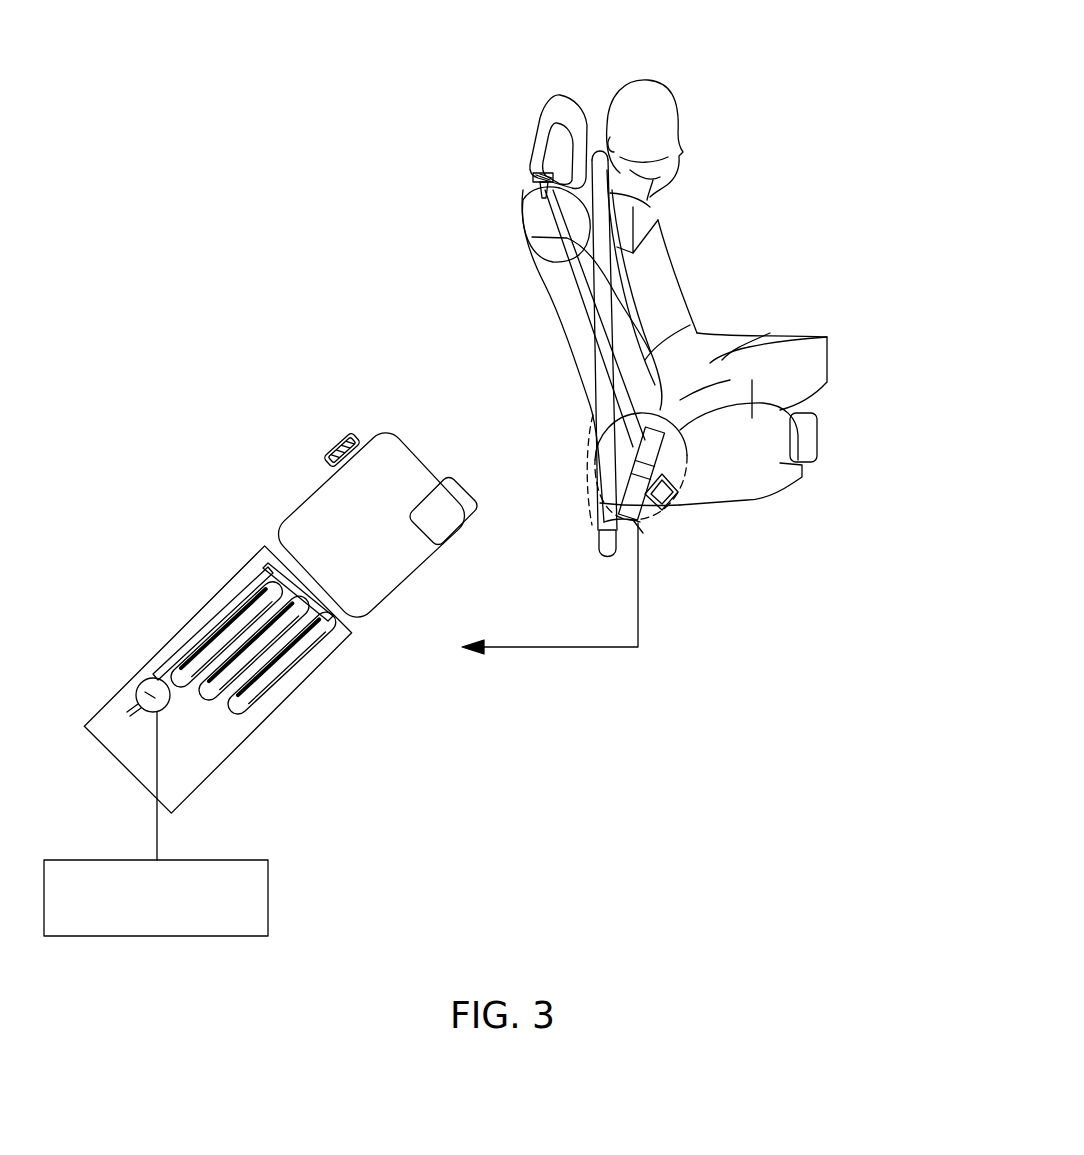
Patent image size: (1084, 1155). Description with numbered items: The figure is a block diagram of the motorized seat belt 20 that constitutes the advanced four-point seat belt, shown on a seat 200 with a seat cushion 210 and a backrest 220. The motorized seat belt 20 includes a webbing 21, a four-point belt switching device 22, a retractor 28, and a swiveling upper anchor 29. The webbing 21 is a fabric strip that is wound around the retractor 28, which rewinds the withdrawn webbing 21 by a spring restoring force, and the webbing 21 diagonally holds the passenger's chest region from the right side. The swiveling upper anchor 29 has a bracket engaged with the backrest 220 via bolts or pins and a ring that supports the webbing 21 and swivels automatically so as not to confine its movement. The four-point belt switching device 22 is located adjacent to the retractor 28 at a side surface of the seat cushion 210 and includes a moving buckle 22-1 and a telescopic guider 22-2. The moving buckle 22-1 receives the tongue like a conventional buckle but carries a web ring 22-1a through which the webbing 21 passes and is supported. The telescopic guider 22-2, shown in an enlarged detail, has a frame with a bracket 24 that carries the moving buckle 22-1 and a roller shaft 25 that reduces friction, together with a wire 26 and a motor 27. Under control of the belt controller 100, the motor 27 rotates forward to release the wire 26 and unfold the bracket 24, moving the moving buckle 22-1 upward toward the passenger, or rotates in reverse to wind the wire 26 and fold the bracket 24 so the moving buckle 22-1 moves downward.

The motorized seat belt 20 is at (790, 120).
The webbing 21 is at (548, 264).
The four-point belt switching device 22 is at (517, 622).
The moving buckle 22-1 is at (660, 440).
The web ring 22-1a is at (325, 447).
The telescopic guider 22-2 is at (680, 470).
The bracket 24 is at (218, 635).
The roller shaft 25 is at (278, 590).
The wire 26 is at (212, 655).
The motor 27 is at (148, 690).
The retractor 28 is at (655, 510).
The swiveling upper anchor 29 is at (533, 177).
The belt controller 100 is at (270, 890).
The seat 200 is at (843, 222).
The seat cushion 210 is at (770, 333).
The backrest 220 is at (690, 325).